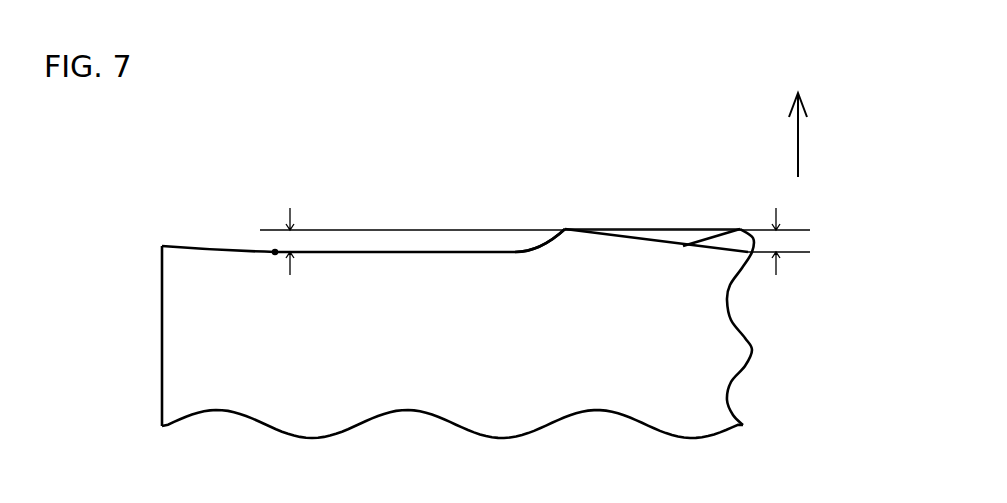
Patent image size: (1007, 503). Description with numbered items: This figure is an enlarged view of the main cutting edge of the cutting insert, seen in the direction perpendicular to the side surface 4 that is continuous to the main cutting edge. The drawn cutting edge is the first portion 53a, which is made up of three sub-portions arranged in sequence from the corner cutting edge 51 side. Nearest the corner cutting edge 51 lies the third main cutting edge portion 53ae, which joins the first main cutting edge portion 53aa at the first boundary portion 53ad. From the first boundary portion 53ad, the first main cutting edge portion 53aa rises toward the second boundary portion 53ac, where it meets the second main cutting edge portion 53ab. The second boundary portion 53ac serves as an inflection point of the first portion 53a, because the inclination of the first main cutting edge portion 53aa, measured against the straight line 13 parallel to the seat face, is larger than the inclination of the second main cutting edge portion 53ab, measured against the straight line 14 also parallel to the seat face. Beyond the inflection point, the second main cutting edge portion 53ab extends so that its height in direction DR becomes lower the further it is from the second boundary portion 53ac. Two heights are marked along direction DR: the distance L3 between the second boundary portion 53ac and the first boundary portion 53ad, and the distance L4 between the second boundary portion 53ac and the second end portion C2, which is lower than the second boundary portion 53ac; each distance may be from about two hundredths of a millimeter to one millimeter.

The side surface 4 is at (735, 357).
The corner cutting edge 51 is at (240, 252).
The first portion 53a is at (511, 165).
The third main cutting edge portion 53ae is at (352, 251).
The first boundary portion 53ad is at (503, 250).
The first main cutting edge portion 53aa is at (523, 250).
The second boundary portion 53ac is at (563, 228).
The second main cutting edge portion 53ab is at (652, 187).
The distance L4 is at (297, 243).
The second end portion C2 is at (275, 250).
The distance L3 is at (703, 241).
The straight line parallel to seat face 14 is at (795, 228).
The straight line parallel to seat face 13 is at (795, 256).
The direction DR is at (820, 135).